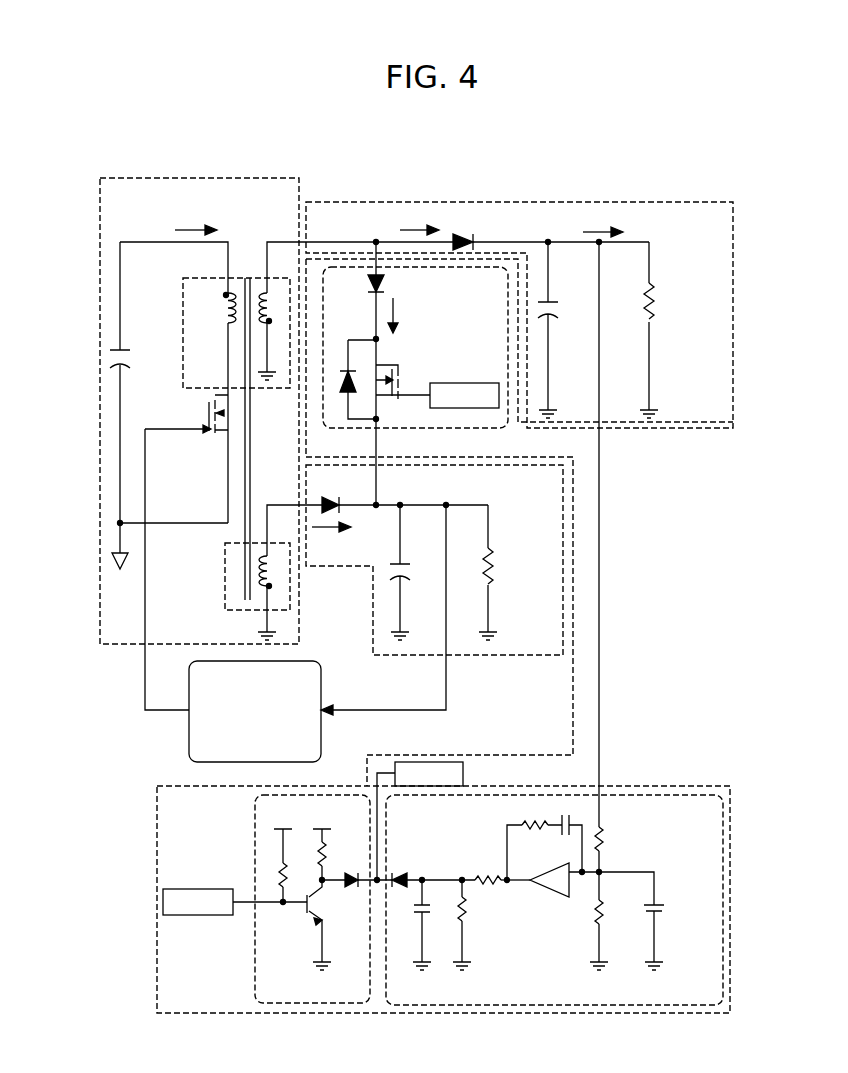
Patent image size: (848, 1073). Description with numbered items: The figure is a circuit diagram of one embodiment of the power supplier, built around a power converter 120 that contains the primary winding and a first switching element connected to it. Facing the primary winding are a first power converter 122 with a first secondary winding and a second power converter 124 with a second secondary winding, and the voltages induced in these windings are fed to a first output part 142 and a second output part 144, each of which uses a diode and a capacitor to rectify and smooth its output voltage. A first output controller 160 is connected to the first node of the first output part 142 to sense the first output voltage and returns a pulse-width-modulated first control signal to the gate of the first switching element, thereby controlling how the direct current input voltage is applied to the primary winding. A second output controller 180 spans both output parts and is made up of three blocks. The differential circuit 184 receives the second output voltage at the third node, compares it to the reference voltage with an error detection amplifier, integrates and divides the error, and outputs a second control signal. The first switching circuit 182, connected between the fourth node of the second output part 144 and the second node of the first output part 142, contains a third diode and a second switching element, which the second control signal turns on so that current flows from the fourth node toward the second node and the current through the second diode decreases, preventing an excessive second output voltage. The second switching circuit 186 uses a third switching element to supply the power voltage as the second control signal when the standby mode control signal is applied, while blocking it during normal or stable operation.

The power converter 120 is at (150, 178).
The first power converter 122 is at (225, 600).
The second power converter 124 is at (245, 278).
The first output part 142 is at (528, 655).
The second output part 144 is at (598, 202).
The first output controller 160 is at (321, 684).
The second output controller 180 is at (157, 820).
The first switching circuit 182 is at (455, 430).
The differential circuit 184 is at (635, 795).
The second switching circuit 186 is at (255, 820).